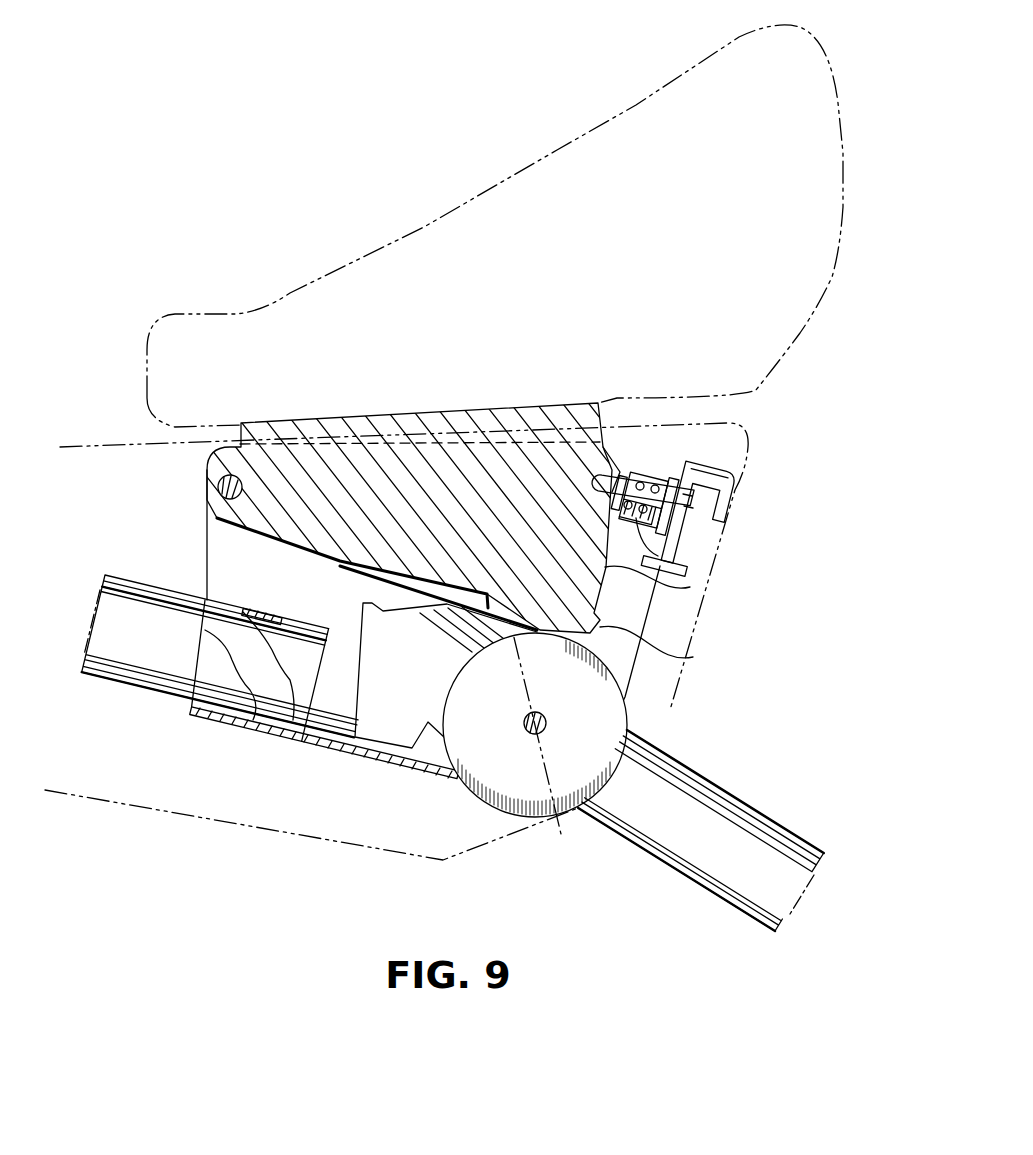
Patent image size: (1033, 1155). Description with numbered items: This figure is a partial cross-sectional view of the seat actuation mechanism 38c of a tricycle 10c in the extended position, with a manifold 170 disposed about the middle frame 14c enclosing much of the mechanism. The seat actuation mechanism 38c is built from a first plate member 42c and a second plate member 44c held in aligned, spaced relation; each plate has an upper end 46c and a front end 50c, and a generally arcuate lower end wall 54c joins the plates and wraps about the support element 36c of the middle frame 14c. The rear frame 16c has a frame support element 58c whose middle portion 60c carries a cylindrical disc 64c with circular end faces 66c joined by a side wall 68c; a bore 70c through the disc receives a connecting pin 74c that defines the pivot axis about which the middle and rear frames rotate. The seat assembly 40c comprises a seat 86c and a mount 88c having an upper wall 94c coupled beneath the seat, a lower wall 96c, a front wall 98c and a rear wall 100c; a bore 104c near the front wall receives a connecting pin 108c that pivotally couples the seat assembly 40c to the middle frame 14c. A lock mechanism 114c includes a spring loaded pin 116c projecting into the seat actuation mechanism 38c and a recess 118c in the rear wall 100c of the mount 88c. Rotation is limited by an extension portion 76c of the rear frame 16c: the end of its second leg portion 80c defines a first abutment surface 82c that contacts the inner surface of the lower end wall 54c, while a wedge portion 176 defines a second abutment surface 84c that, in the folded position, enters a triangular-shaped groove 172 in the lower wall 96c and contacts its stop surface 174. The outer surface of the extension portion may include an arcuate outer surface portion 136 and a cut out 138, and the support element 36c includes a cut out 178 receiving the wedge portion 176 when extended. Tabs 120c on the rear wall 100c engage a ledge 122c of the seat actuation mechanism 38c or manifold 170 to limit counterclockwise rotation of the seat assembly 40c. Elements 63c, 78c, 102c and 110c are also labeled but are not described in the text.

The tricycle 10c is at (146, 193).
The middle frame 14c is at (135, 688).
The rear frame 16c is at (684, 878).
The support element 36c is at (121, 578).
The seat actuation mechanism 38c is at (204, 552).
The seat assembly 40c is at (489, 196).
The first plate member 42c is at (206, 654).
The second plate member 44c is at (222, 593).
The upper end 46c is at (335, 442).
The front end 50c is at (205, 563).
The lower end wall 54c is at (290, 734).
The frame support element 58c is at (748, 800).
The middle portion 60c is at (644, 737).
The wheel 63c is at (477, 812).
The cylindrical disc 64c is at (532, 819).
The circular end faces 66c is at (566, 780).
The side wall 68c is at (540, 822).
The bore 70c is at (548, 723).
The connecting pin 74c is at (524, 721).
The extension portion 76c is at (361, 630).
The ribs 78c is at (428, 670).
The second leg portion 80c is at (373, 730).
The first abutment surface 82c is at (386, 760).
The second abutment surface 84c is at (364, 567).
The seat 86c is at (636, 101).
The mount 88c is at (493, 407).
The upper wall 94c is at (404, 416).
The lower wall 96c is at (256, 536).
The front wall 98c is at (204, 490).
The rear wall 100c is at (690, 587).
The housing wall 102c is at (204, 498).
The bore 104c is at (236, 480).
The connecting pin 108c is at (226, 478).
The roller top 110c is at (577, 637).
The lock mechanism 114c is at (756, 482).
The spring loaded pin 116c is at (648, 485).
The recess 118c is at (585, 478).
The tabs 120c is at (693, 654).
The ledge 122c is at (695, 561).
The outer surface portion 136 is at (352, 753).
The cut out 138 is at (412, 600).
The manifold 170 is at (134, 806).
The triangular-shaped groove 172 is at (455, 585).
The stop surface 174 is at (488, 594).
The wedge portion 176 is at (362, 598).
The cut out 178 is at (340, 670).